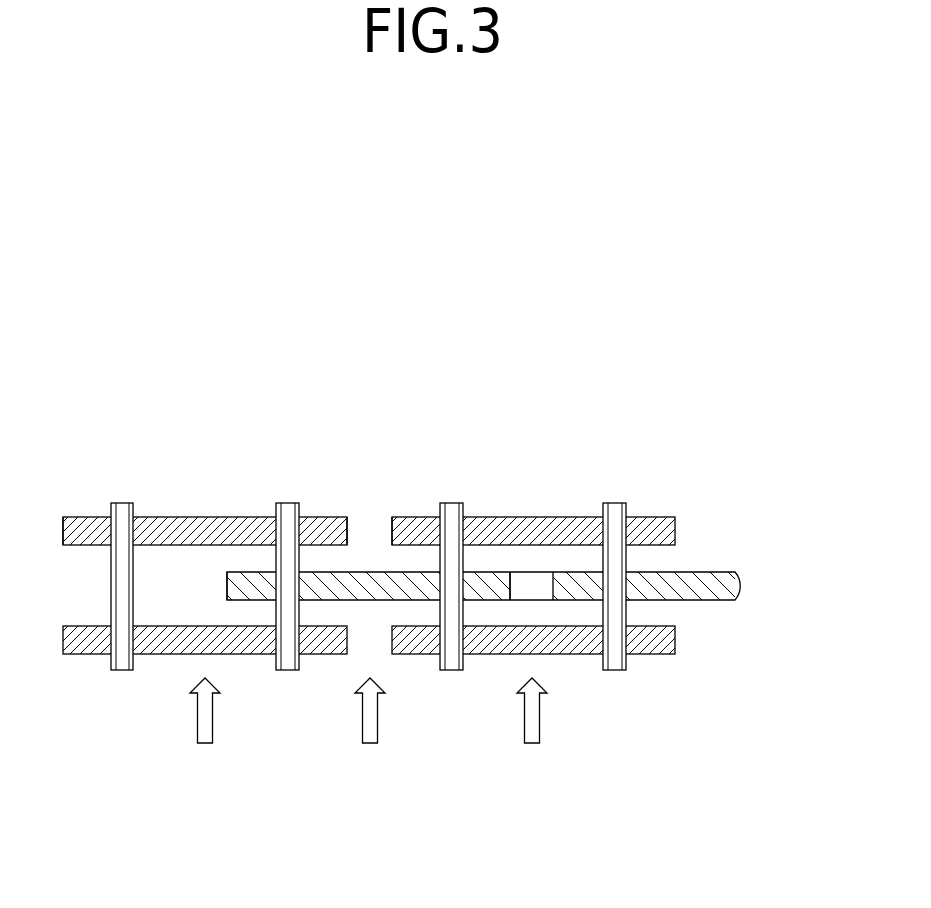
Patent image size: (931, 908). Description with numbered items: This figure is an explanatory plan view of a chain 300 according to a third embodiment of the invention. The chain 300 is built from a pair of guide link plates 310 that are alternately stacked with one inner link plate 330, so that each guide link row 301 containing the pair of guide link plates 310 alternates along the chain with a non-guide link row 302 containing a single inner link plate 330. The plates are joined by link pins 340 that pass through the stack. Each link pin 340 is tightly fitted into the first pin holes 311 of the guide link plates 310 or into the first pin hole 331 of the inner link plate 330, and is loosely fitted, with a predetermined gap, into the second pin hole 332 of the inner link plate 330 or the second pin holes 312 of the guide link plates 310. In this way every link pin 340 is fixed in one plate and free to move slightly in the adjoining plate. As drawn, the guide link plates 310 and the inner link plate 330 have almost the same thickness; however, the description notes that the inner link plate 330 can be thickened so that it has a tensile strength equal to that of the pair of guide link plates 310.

The chain 300 is at (614, 392).
The guide link row 301 is at (368, 729).
The non-guide link row 302 is at (370, 730).
The guide link plate 310 is at (165, 526).
The first pin hole 311 is at (101, 524).
The second pin hole 312 is at (271, 522).
The inner link plate 330 is at (372, 588).
The first pin hole 331 is at (303, 580).
The second pin hole 332 is at (432, 588).
The link pin 340 is at (121, 668).